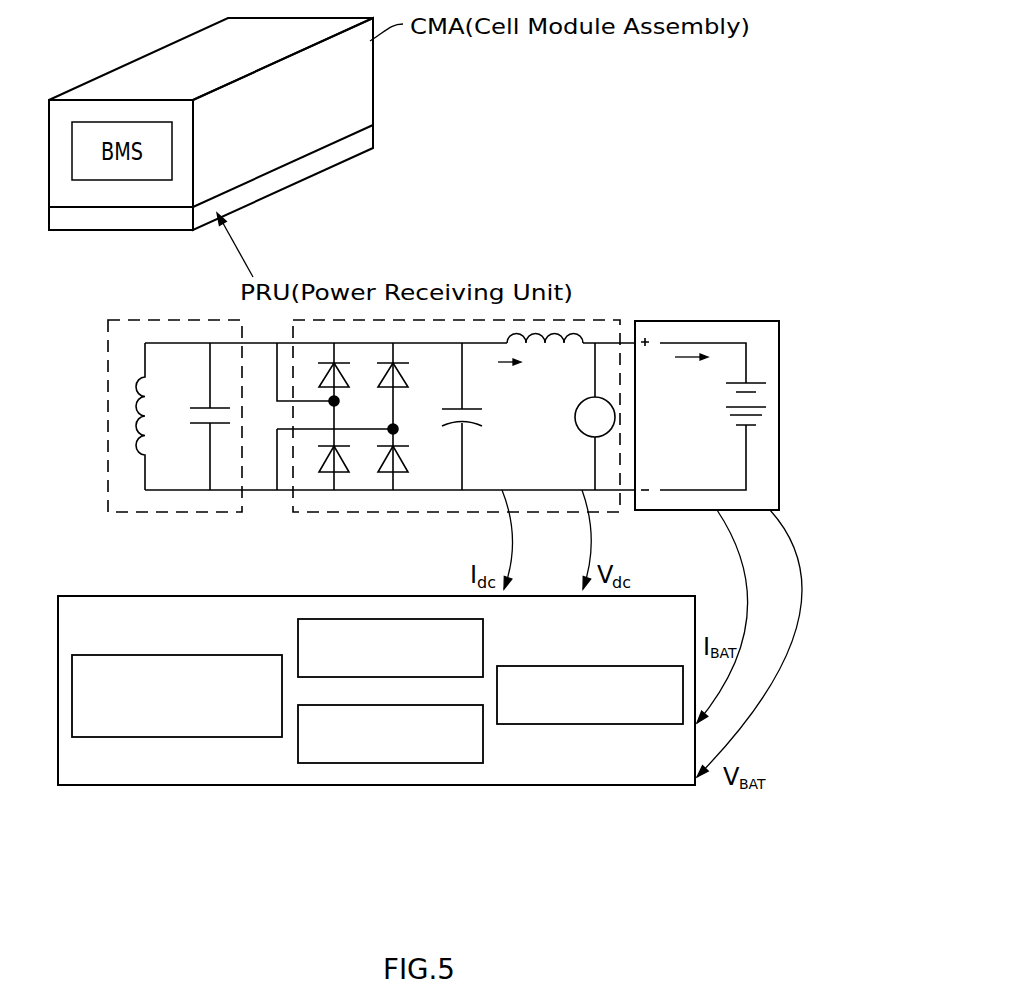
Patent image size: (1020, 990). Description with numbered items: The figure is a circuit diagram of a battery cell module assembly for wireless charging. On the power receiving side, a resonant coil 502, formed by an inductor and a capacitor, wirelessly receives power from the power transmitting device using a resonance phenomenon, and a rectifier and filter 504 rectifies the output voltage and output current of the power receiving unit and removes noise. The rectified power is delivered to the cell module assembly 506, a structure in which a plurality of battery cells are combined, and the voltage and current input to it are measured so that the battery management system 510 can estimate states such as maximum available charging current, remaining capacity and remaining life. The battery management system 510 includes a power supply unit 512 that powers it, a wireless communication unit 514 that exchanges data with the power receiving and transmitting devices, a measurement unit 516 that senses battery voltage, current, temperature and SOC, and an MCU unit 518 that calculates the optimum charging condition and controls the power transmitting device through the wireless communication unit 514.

The resonant coil 502 is at (155, 320).
The rectifier and filter 504 is at (543, 275).
The cell module assembly 506 is at (733, 321).
The battery management system 510 is at (662, 596).
The power supply unit 512 is at (334, 619).
The wireless communication unit 514 is at (233, 655).
The measurement unit 516 is at (632, 666).
The MCU unit 518 is at (373, 763).